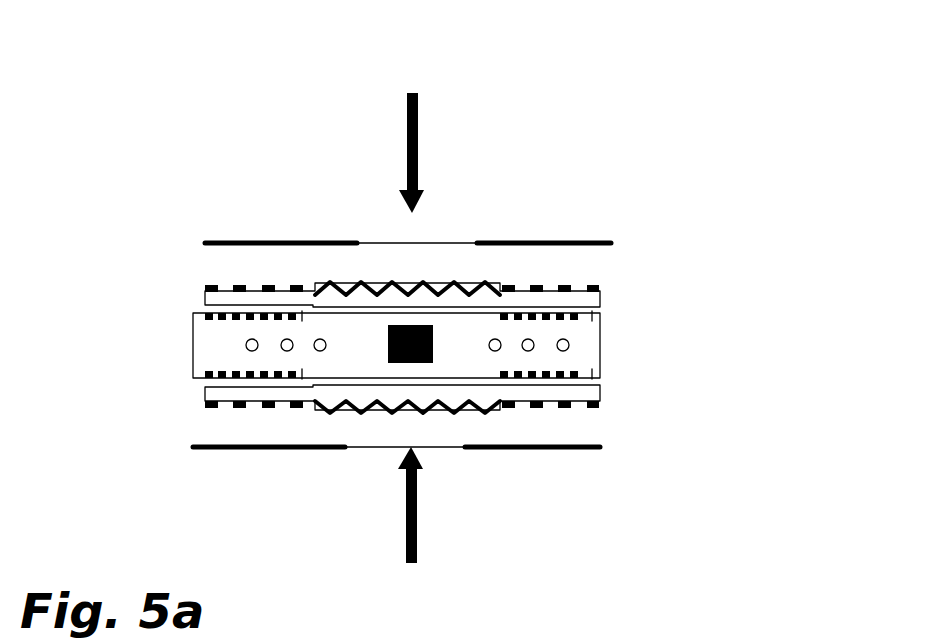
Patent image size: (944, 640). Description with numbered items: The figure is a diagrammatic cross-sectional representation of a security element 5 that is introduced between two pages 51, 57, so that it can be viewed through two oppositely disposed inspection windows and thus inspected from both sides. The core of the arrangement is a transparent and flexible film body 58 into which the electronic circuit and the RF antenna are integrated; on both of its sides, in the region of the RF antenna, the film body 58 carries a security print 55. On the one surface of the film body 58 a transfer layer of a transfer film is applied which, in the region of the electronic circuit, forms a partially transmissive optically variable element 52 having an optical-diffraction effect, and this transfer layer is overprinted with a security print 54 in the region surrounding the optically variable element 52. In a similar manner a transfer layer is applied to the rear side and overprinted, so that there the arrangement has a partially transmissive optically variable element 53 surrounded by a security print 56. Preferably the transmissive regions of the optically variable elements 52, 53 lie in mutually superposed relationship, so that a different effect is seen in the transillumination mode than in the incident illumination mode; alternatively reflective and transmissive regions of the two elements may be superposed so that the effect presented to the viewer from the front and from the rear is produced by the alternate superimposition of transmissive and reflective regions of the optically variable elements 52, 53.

The security element 5 is at (520, 130).
The page 51 is at (552, 243).
The partially transmissive optically variable element 52 is at (374, 280).
The partially transmissive optically variable element 53 is at (467, 414).
The security print 54 is at (598, 289).
The security print 55 is at (600, 312).
The security print 56 is at (205, 405).
The page 57 is at (263, 449).
The film body 58 is at (600, 354).